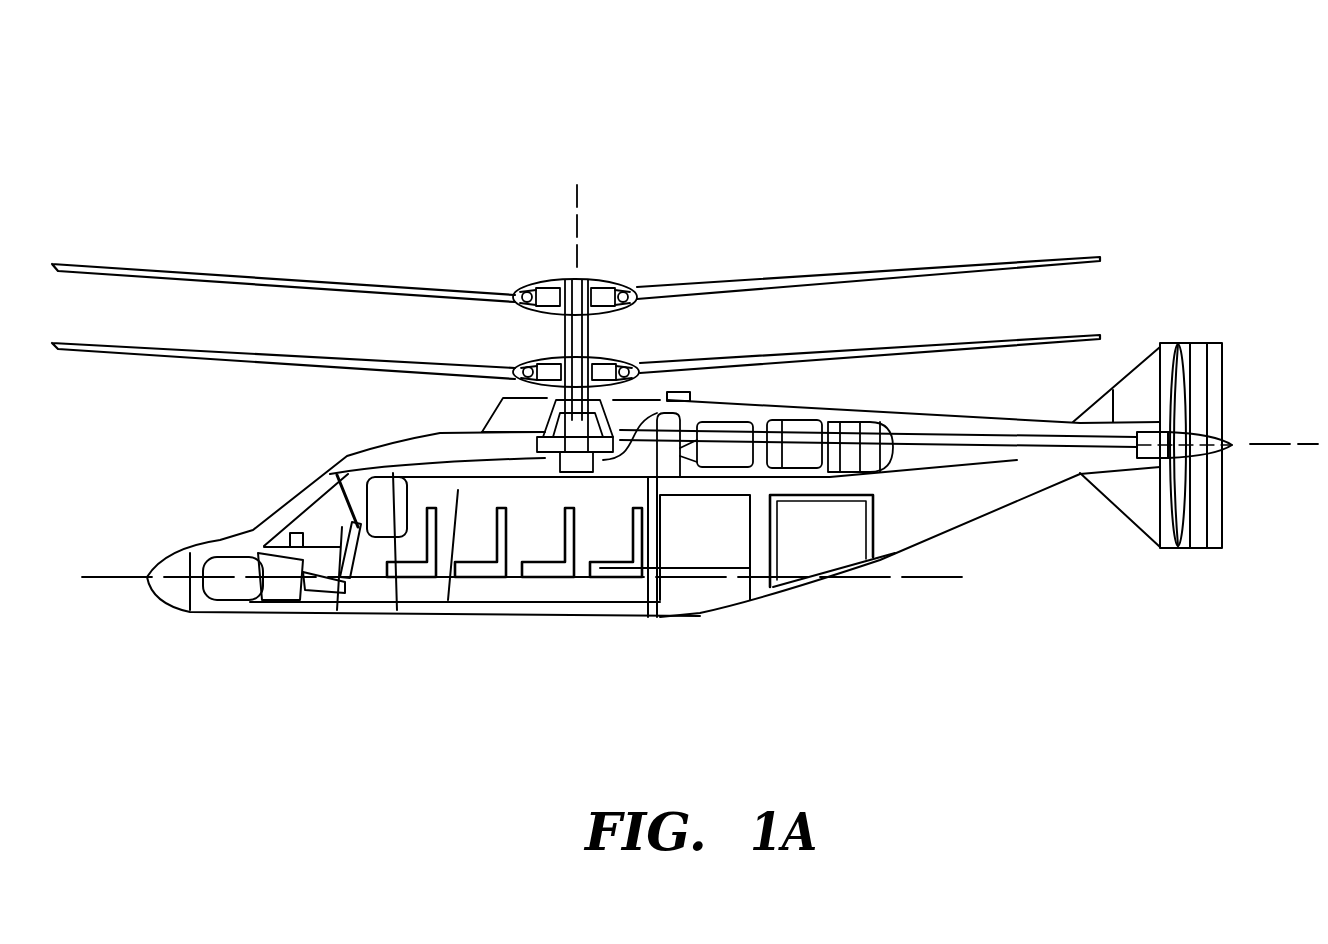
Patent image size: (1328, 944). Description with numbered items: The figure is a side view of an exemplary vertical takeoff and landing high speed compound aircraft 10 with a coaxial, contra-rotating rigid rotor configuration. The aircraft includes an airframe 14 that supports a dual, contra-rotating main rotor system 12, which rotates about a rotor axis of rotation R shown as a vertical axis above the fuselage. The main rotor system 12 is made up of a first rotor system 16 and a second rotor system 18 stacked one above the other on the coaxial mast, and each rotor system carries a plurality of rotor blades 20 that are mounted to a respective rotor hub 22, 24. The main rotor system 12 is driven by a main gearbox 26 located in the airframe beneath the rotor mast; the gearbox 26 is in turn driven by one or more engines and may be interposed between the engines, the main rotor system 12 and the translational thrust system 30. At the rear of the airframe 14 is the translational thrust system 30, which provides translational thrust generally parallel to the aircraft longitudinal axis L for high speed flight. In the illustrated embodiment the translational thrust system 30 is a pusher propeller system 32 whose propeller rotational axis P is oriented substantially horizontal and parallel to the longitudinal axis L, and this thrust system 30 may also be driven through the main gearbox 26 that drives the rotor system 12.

The rotary wing aircraft 10 is at (875, 148).
The main rotor system 12 is at (642, 272).
The airframe 14 is at (374, 461).
The first rotor system 16 is at (549, 276).
The second rotor system 18 is at (619, 360).
The rotor blades 20 is at (768, 278).
The rotor hub 22 is at (602, 288).
The rotor hub 24 is at (549, 365).
The main gearbox 26 is at (540, 430).
The translational thrust system 30 is at (1242, 359).
The pusher propeller system 32 is at (1185, 401).